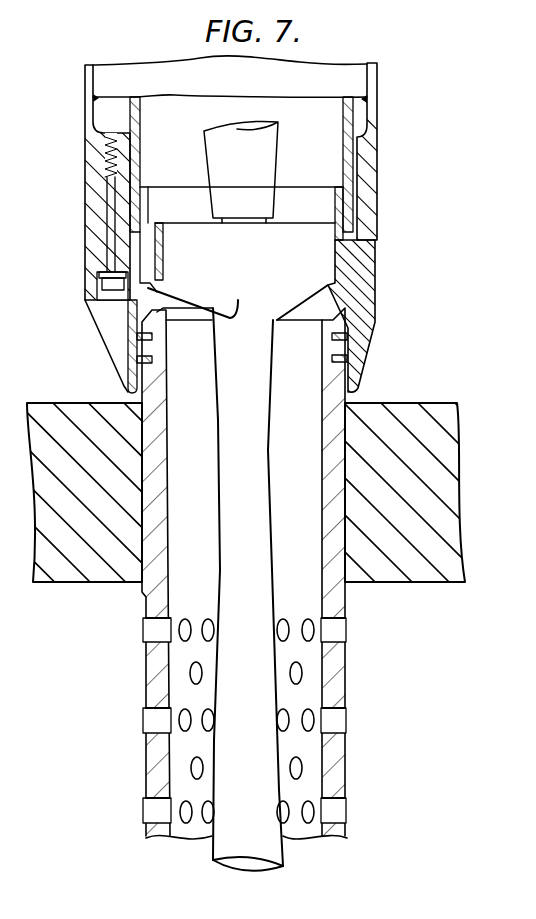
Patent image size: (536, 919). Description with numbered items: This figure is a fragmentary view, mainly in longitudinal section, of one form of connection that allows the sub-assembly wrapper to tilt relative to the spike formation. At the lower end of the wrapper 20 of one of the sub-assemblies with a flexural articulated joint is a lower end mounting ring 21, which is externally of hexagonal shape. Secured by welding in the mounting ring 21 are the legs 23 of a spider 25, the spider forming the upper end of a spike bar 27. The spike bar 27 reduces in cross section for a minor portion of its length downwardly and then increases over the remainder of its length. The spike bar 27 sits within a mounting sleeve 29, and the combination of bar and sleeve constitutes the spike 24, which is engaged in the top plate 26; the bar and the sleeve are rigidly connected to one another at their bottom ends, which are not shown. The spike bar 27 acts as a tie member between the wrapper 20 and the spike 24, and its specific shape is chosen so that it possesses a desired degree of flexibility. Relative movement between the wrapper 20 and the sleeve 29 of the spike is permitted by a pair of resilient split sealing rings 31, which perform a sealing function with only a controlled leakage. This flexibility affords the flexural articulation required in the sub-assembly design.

The wrapper 20 is at (376, 80).
The lower end mounting ring 21 is at (360, 292).
The legs 23 is at (322, 268).
The spike 24 is at (146, 596).
The spider 25 is at (197, 273).
The top plate 26 is at (388, 420).
The spike bar 27 is at (250, 437).
The mounting sleeve 29 is at (165, 771).
The resilient split sealing rings 31 is at (348, 358).